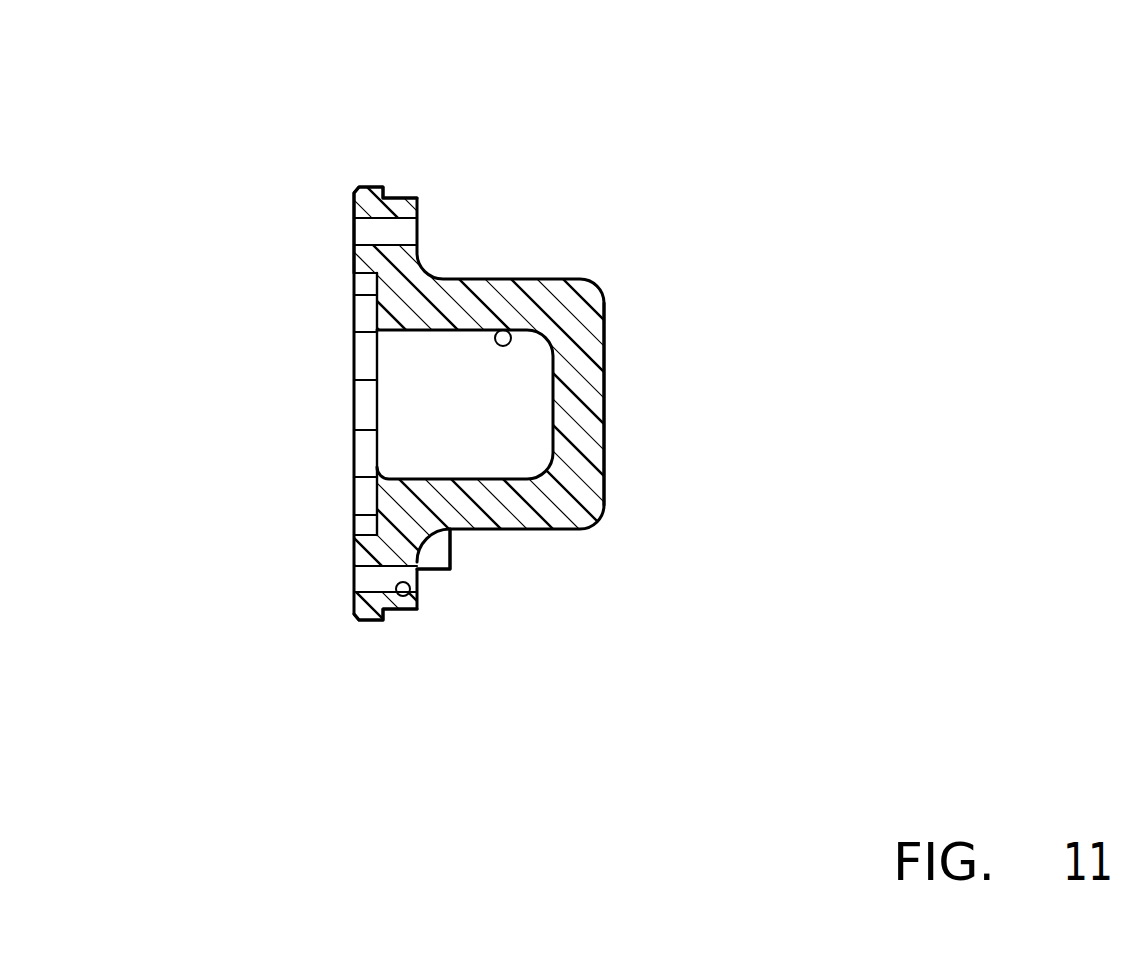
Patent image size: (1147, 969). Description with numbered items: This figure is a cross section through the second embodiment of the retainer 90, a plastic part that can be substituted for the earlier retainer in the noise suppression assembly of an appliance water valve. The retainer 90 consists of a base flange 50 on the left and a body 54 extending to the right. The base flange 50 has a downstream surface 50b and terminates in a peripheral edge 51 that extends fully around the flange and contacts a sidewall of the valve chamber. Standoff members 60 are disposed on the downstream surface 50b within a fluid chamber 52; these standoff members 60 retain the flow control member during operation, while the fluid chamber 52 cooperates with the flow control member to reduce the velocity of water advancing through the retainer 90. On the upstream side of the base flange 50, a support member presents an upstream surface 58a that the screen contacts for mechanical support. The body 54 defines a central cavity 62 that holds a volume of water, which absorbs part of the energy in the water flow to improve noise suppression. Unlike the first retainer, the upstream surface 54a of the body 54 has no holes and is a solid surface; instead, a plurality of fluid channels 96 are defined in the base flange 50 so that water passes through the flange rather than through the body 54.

The retainer 90 is at (803, 155).
The base flange 50 is at (357, 549).
The downstream surface 50b is at (352, 263).
The peripheral edge 51 is at (357, 612).
The fluid chamber 52 is at (353, 282).
The body 54 is at (540, 530).
The upstream surface 54a is at (605, 373).
The upstream surface 58a is at (453, 553).
The standoff member 60 is at (360, 410).
The central cavity 62 is at (508, 330).
The fluid channel 96 is at (401, 597).